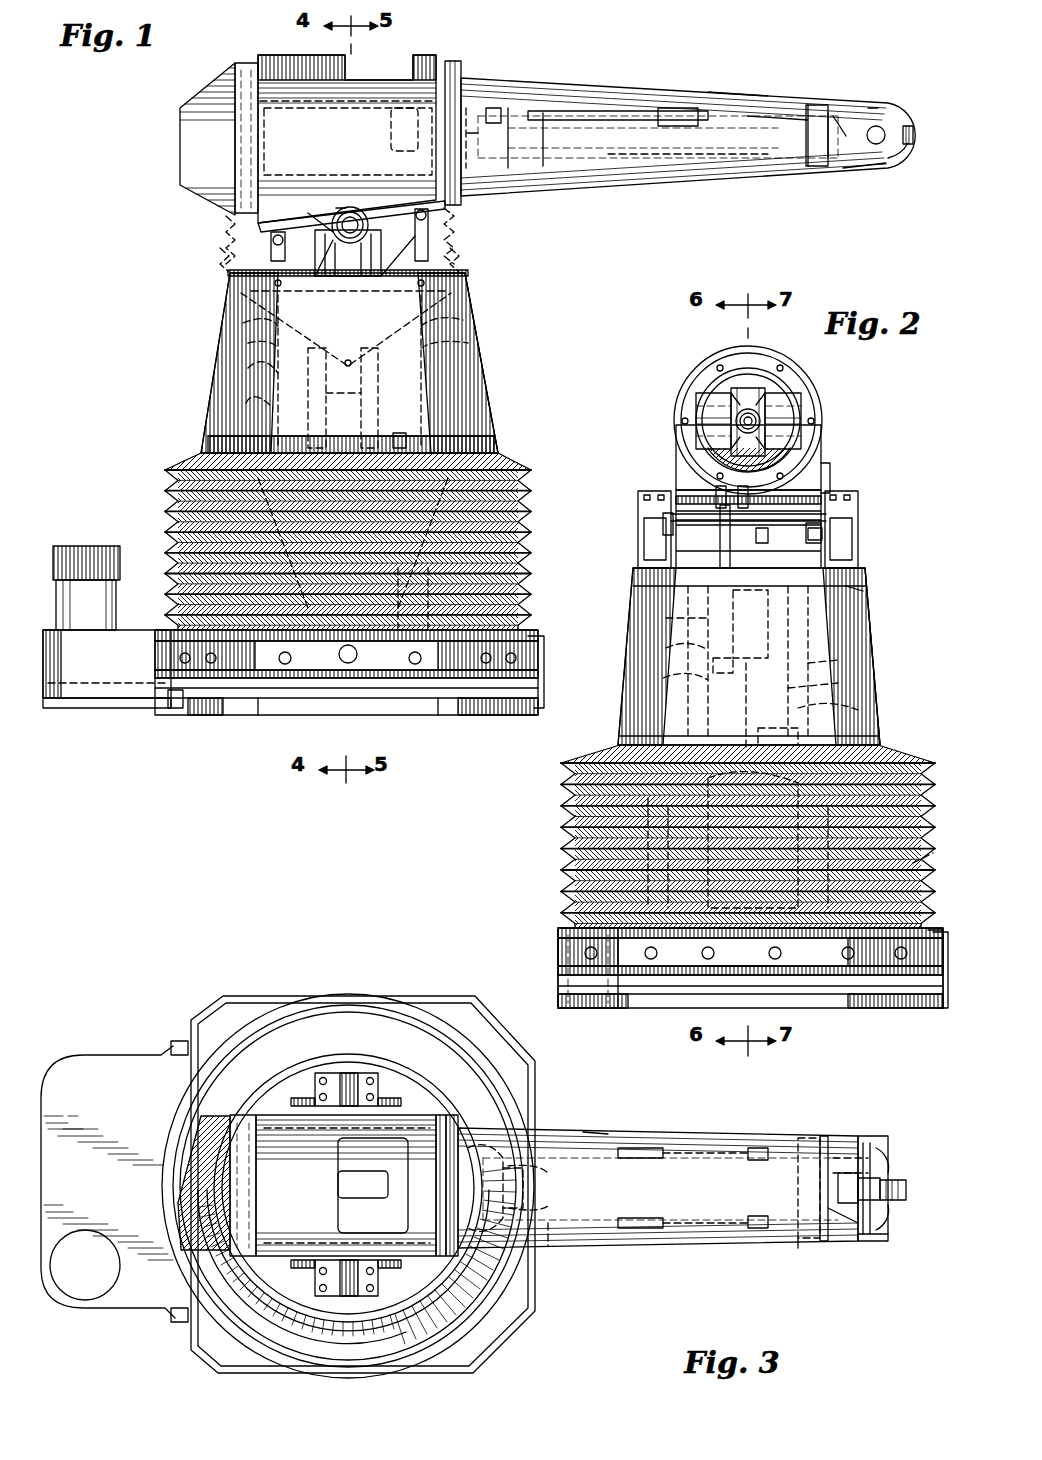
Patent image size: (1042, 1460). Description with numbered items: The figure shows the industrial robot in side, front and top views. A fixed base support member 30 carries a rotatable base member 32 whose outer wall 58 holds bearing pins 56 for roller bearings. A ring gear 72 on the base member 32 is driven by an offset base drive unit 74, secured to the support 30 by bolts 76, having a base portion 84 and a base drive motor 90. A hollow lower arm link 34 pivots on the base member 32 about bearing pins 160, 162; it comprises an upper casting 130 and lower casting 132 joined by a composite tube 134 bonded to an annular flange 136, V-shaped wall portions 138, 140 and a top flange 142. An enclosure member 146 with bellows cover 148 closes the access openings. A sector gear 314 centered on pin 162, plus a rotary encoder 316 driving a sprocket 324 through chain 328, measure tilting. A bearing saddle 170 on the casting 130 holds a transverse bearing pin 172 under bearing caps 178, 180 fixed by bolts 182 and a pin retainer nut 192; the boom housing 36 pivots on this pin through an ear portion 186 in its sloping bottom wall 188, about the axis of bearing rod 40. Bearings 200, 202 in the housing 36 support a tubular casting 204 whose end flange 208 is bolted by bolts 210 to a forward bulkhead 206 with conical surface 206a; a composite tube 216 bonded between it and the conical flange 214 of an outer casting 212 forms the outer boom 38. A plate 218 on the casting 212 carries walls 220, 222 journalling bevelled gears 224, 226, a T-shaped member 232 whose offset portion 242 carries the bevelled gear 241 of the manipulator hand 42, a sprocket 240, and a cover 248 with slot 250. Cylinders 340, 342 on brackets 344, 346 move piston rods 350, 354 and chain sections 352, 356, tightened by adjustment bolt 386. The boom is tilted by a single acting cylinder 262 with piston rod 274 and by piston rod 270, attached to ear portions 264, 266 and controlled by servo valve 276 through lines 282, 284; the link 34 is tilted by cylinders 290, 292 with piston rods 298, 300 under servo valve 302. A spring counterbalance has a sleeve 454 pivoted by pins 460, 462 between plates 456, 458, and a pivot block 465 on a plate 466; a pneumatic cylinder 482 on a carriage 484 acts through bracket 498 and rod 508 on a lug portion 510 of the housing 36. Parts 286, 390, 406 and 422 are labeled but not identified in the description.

In FIG. 1, the fixed base support member 30 is at (238, 708).
In FIG. 2, the fixed base support member 30 is at (875, 1010).
In FIG. 3, the fixed base support member 30 is at (485, 1013).
In FIG. 1, the base member 32 is at (514, 652).
In FIG. 2, the base member 32 is at (918, 946).
In FIG. 1, the turret or lower arm link 34 is at (472, 360).
In FIG. 2, the turret or lower arm link 34 is at (866, 618).
In FIG. 3, the turret or lower arm link 34 is at (264, 1060).
In FIG. 1, the boom housing 36 is at (278, 47).
In FIG. 2, the boom housing 36 is at (700, 353).
In FIG. 3, the boom housing 36 is at (250, 1262).
In FIG. 1, the outer boom 38 is at (596, 180).
In FIG. 2, the outer boom 38 is at (690, 368).
In FIG. 3, the outer boom 38 is at (655, 1242).
In FIG. 1, the bearing rod 40 is at (348, 253).
In FIG. 1, the manipulator hand member 42 is at (870, 100).
In FIG. 2, the manipulator hand member 42 is at (792, 394).
In FIG. 3, the manipulator hand member 42 is at (880, 1130).
In FIG. 1, the bearing pin 56 is at (280, 658).
In FIG. 2, the bearing pin 56 is at (697, 950).
In FIG. 1, the outer wall 58 is at (480, 662).
In FIG. 2, the outer wall 58 is at (800, 948).
In FIG. 1, the ring gear 72 is at (440, 660).
In FIG. 2, the ring gear 72 is at (834, 976).
In FIG. 1, the offset base drive unit 74 is at (66, 705).
In FIG. 3, the offset base drive unit 74 is at (97, 1047).
In FIG. 1, the bolts 76 is at (165, 703).
In FIG. 3, the bolts 76 is at (168, 1037).
In FIG. 1, the base portion 84 is at (98, 702).
In FIG. 1, the base drive motor 90 is at (77, 540).
In FIG. 3, the base drive motor 90 is at (77, 1270).
In FIG. 1, the upper casting 130 is at (232, 287).
In FIG. 2, the upper casting 130 is at (636, 580).
In FIG. 3, the upper casting 130 is at (262, 1278).
In FIG. 1, the lower casting 132 is at (482, 410).
In FIG. 2, the lower casting 132 is at (637, 735).
In FIG. 1, the tube 134 is at (478, 380).
In FIG. 2, the tube 134 is at (866, 640).
In FIG. 3, the tube 134 is at (250, 1080).
In FIG. 1, the downturned annular flange 136 is at (458, 269).
In FIG. 2, the downturned annular flange 136 is at (858, 560).
In FIG. 3, the downturned annular flange 136 is at (252, 1110).
In FIG. 2, the V-shaped wall portion 138 is at (922, 852).
In FIG. 1, the V-shaped wall portion 140 is at (400, 658).
In FIG. 2, the V-shaped wall portion 140 is at (558, 808).
In FIG. 2, the top flange 142 is at (751, 705).
In FIG. 1, the removable enclosure member 146 is at (178, 452).
In FIG. 2, the removable enclosure member 146 is at (580, 745).
In FIG. 3, the removable enclosure member 146 is at (232, 1322).
In FIG. 1, the cover 148 is at (162, 475).
In FIG. 2, the cover 148 is at (558, 768).
In FIG. 3, the cover 148 is at (258, 1328).
In FIG. 2, the bearing pin 160 is at (918, 938).
In FIG. 1, the bearing pin 162 is at (338, 658).
In FIG. 2, the bearing pin 162 is at (560, 936).
In FIG. 1, the bearing saddle 170 is at (349, 276).
In FIG. 1, the bearing pin 172 is at (342, 199).
In FIG. 2, the bearing pin 172 is at (815, 507).
In FIG. 2, the bearing cap 178 is at (840, 488).
In FIG. 3, the bearing cap 178 is at (338, 1065).
In FIG. 1, the bearing cap 180 is at (330, 200).
In FIG. 2, the bearing cap 180 is at (632, 488).
In FIG. 3, the bearing cap 180 is at (328, 1282).
In FIG. 1, the bolts 182 is at (298, 205).
In FIG. 2, the bolts 182 is at (848, 497).
In FIG. 3, the bolts 182 is at (312, 1072).
In FIG. 3, the depending ear portion 186 is at (338, 1262).
In FIG. 1, the sloping bottom wall portion 188 is at (413, 200).
In FIG. 2, the sloping bottom wall portion 188 is at (816, 488).
In FIG. 1, the pin retainer nut 192 is at (360, 210).
In FIG. 1, the bearing 200 is at (258, 122).
In FIG. 3, the bearing 200 is at (258, 1185).
In FIG. 1, the bearing 202 is at (410, 88).
In FIG. 3, the bearing 202 is at (405, 1144).
In FIG. 1, the tubular casting 204 is at (370, 64).
In FIG. 3, the tubular casting 204 is at (328, 1150).
In FIG. 1, the forward cast housing or bulkhead 206 is at (505, 170).
In FIG. 2, the forward cast housing or bulkhead 206 is at (798, 373).
In FIG. 3, the forward cast housing or bulkhead 206 is at (496, 1127).
In FIG. 1, the tapered outer conical surface 206a is at (462, 72).
In FIG. 3, the tapered outer conical surface 206a is at (540, 1238).
In FIG. 1, the forward end flange 208 is at (443, 55).
In FIG. 3, the forward end flange 208 is at (434, 1107).
In FIG. 1, the bolts 210 is at (459, 125).
In FIG. 2, the bolts 210 is at (690, 406).
In FIG. 3, the bolts 210 is at (445, 1108).
In FIG. 1, the outer casting 212 is at (810, 97).
In FIG. 3, the outer casting 212 is at (800, 1236).
In FIG. 1, the tapered conical annular flange 214 is at (806, 160).
In FIG. 3, the tapered conical annular flange 214 is at (800, 1130).
In FIG. 1, the tube 216 is at (730, 92).
In FIG. 2, the tube 216 is at (694, 386).
In FIG. 3, the tube 216 is at (580, 1124).
In FIG. 1, the plate 218 is at (820, 100).
In FIG. 2, the plate 218 is at (746, 380).
In FIG. 3, the plate 218 is at (816, 1128).
In FIG. 3, the wall portion 220 is at (884, 1158).
In FIG. 1, the wall portion 222 is at (884, 160).
In FIG. 3, the wall portion 222 is at (886, 1225).
In FIG. 2, the beveled gear 224 is at (792, 402).
In FIG. 3, the beveled gear 224 is at (832, 1158).
In FIG. 2, the beveled gear 226 is at (690, 426).
In FIG. 3, the beveled gear 226 is at (836, 1233).
In FIG. 1, the T-shaped member 232 is at (875, 122).
In FIG. 3, the T-shaped member 232 is at (848, 1185).
In FIG. 1, the sprocket 240 is at (840, 128).
In FIG. 1, the third bevelled gear 241 is at (905, 120).
In FIG. 2, the third bevelled gear 241 is at (734, 403).
In FIG. 3, the third bevelled gear 241 is at (898, 1182).
In FIG. 2, the offset portion 242 is at (792, 428).
In FIG. 1, the cover 248 is at (846, 162).
In FIG. 2, the cover 248 is at (700, 436).
In FIG. 3, the cover 248 is at (856, 1234).
In FIG. 2, the slot 250 is at (753, 383).
In FIG. 3, the slot 250 is at (830, 1179).
In FIG. 2, the single acting hydraulic cylinder 262 is at (710, 972).
In FIG. 1, the depending ear portions 264 is at (225, 224).
In FIG. 1, the depending ear portions 266 is at (452, 214).
In FIG. 2, the depending ear portions 266 is at (708, 485).
In FIG. 1, the piston rod 270 is at (228, 255).
In FIG. 1, the piston rod 274 is at (450, 250).
In FIG. 2, the piston rod 274 is at (712, 535).
In FIG. 1, the servo valve 276 is at (315, 366).
In FIG. 1, the output control line 282 is at (238, 363).
In FIG. 1, the output control line 284 is at (238, 395).
In FIG. 2, the output control line 284 is at (812, 526).
In FIG. 2, the cam 286 is at (656, 518).
In FIG. 1, the single acting hydraulic cylinder 290 is at (168, 586).
In FIG. 1, the single acting hydraulic cylinder 292 is at (348, 699).
In FIG. 2, the single acting hydraulic cylinder 292 is at (663, 972).
In FIG. 1, the piston rod 298 is at (240, 316).
In FIG. 1, the piston rod 300 is at (455, 312).
In FIG. 1, the servo valve 302 is at (365, 366).
In FIG. 2, the servo valve 302 is at (865, 680).
In FIG. 1, the sector gear 314 is at (223, 678).
In FIG. 2, the sector gear 314 is at (558, 871).
In FIG. 2, the rotary encoder 316 is at (860, 586).
In FIG. 1, the sprocket 324 is at (305, 212).
In FIG. 1, the chain 328 is at (300, 225).
In FIG. 2, the chain 328 is at (816, 460).
In FIG. 3, the double acting hydraulic cylinder 340 is at (610, 1142).
In FIG. 1, the double acting cylinder 342 is at (577, 103).
In FIG. 3, the double acting cylinder 342 is at (618, 1240).
In FIG. 1, the bracket 344 is at (528, 100).
In FIG. 3, the bracket 344 is at (532, 1166).
In FIG. 1, the bracket 346 is at (540, 165).
In FIG. 3, the double acting piston 350 is at (682, 1142).
In FIG. 3, the drive chain section 352 is at (748, 1140).
In FIG. 1, the double acting piston rod 354 is at (677, 100).
In FIG. 3, the double acting piston rod 354 is at (705, 1240).
In FIG. 1, the chain drive section 356 is at (762, 92).
In FIG. 3, the chain drive section 356 is at (748, 1240).
In FIG. 1, the adjustment bolt 386 is at (382, 112).
In FIG. 1, the cable 390 is at (660, 160).
In FIG. 3, the connector 406 is at (514, 1180).
In FIG. 1, the end plate 422 is at (230, 72).
In FIG. 3, the end plate 422 is at (215, 1092).
In FIG. 1, the outer sleeve 454 is at (320, 392).
In FIG. 2, the outer sleeve 454 is at (650, 669).
In FIG. 1, the plate 456 is at (460, 335).
In FIG. 2, the plate 456 is at (645, 617).
In FIG. 1, the plate 458 is at (260, 336).
In FIG. 2, the plate 458 is at (734, 608).
In FIG. 1, the pin 460 is at (340, 350).
In FIG. 2, the pin 460 is at (652, 644).
In FIG. 2, the pin 462 is at (720, 656).
In FIG. 2, the pivot block 465 is at (718, 770).
In FIG. 2, the plate 466 is at (558, 830).
In FIG. 2, the pneumatic single acting cylinder 482 is at (755, 720).
In FIG. 1, the carriage 484 is at (500, 566).
In FIG. 2, the carriage 484 is at (741, 946).
In FIG. 1, the bracket 498 is at (386, 425).
In FIG. 2, the bracket 498 is at (852, 702).
In FIG. 2, the rod 508 is at (860, 655).
In FIG. 2, the lug portion 510 is at (748, 528).